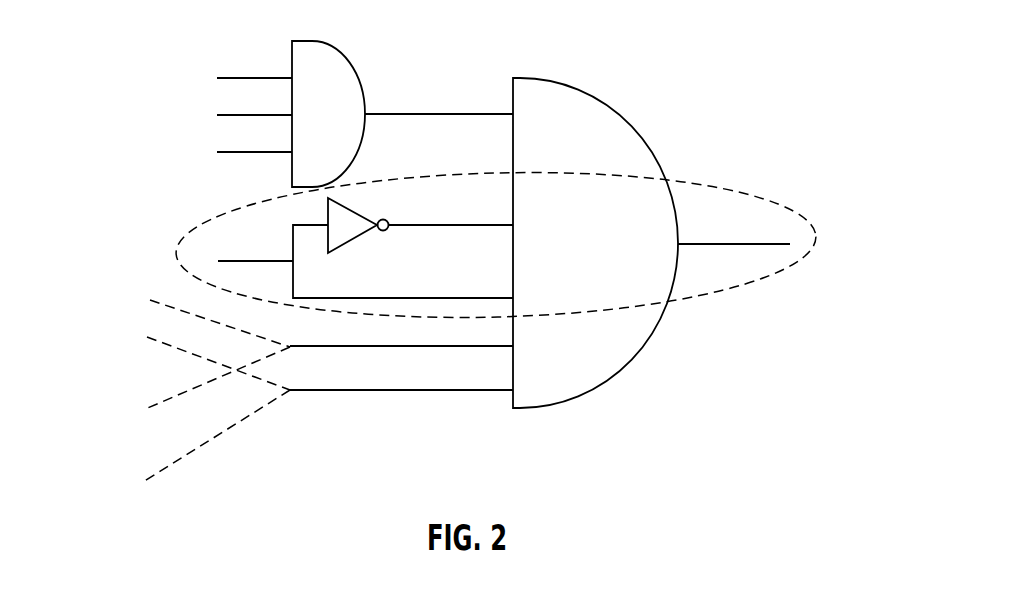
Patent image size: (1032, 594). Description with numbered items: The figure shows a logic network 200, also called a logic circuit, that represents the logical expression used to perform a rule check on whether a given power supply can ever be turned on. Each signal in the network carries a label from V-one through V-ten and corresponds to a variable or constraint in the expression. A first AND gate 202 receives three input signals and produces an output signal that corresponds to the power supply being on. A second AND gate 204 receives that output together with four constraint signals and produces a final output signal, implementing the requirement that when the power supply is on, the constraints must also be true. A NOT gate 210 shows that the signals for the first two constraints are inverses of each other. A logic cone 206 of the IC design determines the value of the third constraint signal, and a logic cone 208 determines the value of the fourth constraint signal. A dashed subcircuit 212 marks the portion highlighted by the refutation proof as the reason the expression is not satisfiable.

The logic network 200 is at (835, 72).
The gate 202 is at (350, 114).
The gate 204 is at (651, 243).
The logic cone 206 is at (160, 297).
The logic cone 208 is at (165, 468).
The NOT gate 210 is at (336, 252).
The subcircuit 212 is at (745, 273).